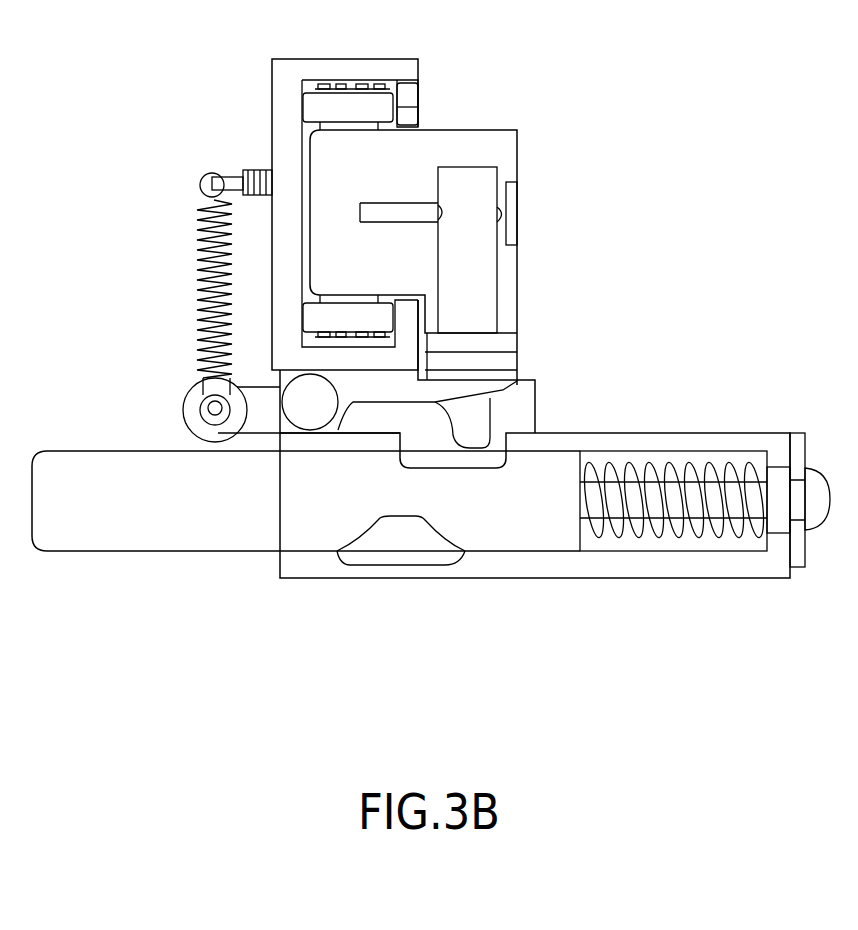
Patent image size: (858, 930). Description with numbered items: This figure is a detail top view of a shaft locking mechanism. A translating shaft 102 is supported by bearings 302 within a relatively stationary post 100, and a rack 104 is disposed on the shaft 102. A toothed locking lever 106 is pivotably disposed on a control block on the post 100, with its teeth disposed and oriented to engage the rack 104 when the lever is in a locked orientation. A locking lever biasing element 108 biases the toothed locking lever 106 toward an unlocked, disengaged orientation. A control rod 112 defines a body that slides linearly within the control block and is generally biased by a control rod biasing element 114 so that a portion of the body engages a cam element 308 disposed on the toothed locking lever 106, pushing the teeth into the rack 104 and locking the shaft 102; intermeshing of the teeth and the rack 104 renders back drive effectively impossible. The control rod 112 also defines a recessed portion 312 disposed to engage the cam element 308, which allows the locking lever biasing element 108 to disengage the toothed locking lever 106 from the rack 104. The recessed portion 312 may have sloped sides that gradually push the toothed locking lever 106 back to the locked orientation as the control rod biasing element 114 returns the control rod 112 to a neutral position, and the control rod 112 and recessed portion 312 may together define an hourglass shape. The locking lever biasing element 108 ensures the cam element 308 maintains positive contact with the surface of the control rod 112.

The post 100 is at (288, 70).
The translating shaft 102 is at (460, 145).
The rack 104 is at (508, 363).
The toothed locking lever 106 is at (190, 405).
The locking lever biasing element 108 is at (203, 242).
The control rod 112 is at (148, 543).
The control rod biasing element 114 is at (678, 467).
The bearings 302 is at (348, 105).
The cam element 308 is at (480, 425).
The recessed portion 312 is at (400, 565).